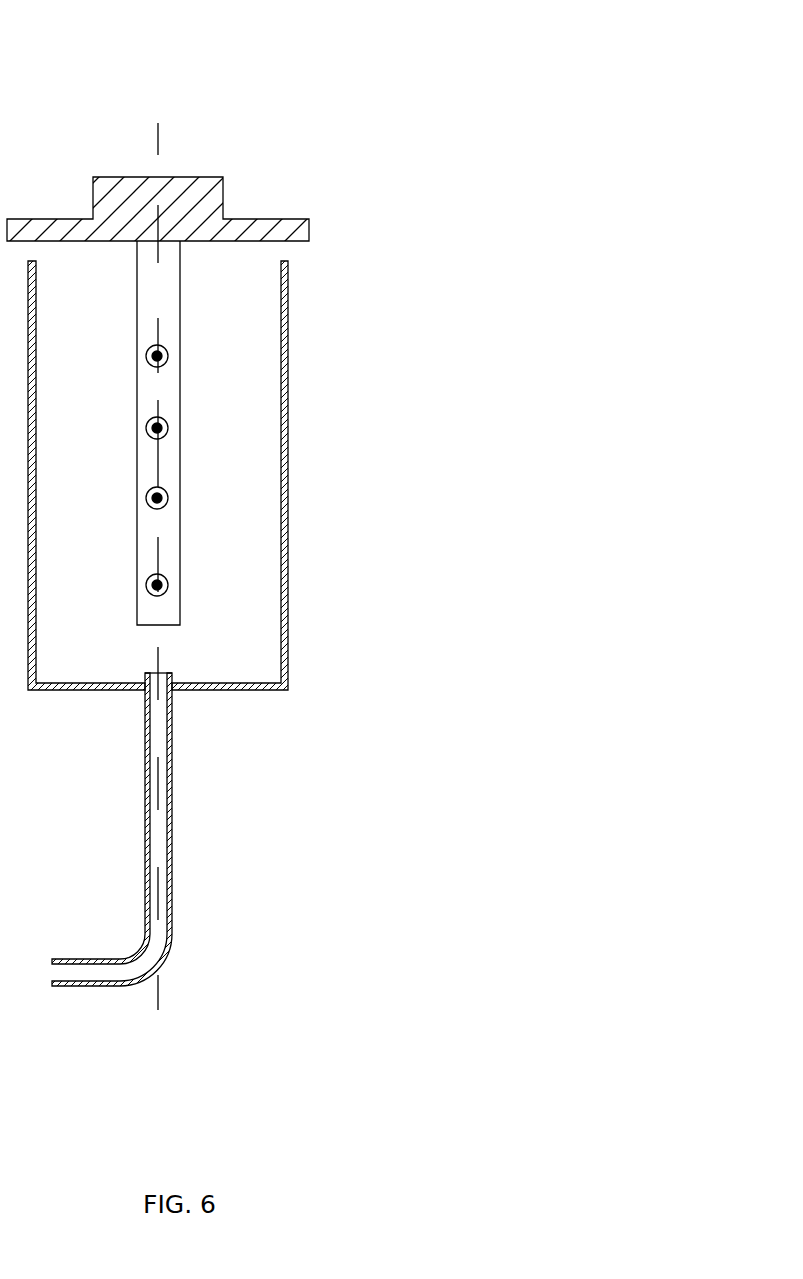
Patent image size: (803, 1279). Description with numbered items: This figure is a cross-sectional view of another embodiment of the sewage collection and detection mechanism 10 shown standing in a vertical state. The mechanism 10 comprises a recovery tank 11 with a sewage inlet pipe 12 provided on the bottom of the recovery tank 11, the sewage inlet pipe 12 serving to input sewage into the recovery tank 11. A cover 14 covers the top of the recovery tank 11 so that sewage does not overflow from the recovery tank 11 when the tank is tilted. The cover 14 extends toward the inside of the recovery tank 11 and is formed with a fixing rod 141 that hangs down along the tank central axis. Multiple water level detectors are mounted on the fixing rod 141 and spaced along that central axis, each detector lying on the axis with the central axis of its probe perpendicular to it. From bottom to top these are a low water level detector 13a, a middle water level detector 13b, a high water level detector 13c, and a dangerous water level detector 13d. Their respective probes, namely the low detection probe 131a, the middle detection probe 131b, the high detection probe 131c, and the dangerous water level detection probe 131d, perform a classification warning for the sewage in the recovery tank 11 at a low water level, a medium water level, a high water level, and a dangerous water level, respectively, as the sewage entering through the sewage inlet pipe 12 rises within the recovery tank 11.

The sewage collection and detection mechanism 10 is at (165, 36).
The recovery tank 11 is at (289, 668).
The sewage inlet pipe 12 is at (170, 850).
The low water level detector 13a is at (313, 578).
The middle water level detector 13b is at (313, 499).
The high water level detector 13c is at (316, 425).
The dangerous water level detector 13d is at (317, 346).
The low detection probe 131a is at (160, 583).
The middle detection probe 131b is at (160, 496).
The high detection probe 131c is at (160, 426).
The dangerous water level detection probe 131d is at (160, 354).
The cover 14 is at (203, 178).
The fixing rod 141 is at (182, 282).